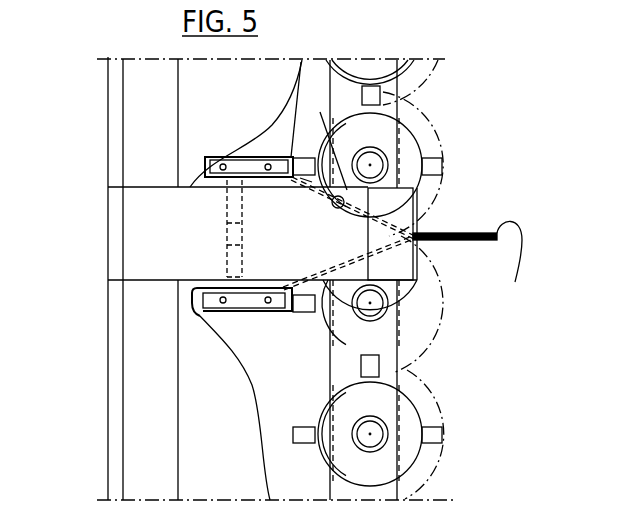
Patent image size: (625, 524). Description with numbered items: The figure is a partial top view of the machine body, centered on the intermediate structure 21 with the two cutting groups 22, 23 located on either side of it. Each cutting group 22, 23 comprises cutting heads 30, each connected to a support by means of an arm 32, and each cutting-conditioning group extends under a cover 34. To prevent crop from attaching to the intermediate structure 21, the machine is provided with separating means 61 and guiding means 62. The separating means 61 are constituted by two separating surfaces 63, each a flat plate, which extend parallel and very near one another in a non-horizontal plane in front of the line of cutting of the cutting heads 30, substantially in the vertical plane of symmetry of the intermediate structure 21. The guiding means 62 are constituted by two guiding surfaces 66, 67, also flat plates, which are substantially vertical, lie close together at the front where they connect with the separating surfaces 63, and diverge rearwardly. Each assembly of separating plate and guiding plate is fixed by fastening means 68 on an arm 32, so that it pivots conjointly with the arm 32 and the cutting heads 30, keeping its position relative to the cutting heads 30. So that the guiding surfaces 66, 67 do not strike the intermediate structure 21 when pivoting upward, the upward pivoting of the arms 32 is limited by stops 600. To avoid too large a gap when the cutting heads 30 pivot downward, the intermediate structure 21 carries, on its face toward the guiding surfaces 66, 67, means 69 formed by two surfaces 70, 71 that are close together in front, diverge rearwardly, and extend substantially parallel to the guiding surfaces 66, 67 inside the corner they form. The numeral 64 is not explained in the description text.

The intermediate structure 21 is at (140, 222).
The cutting group 22 is at (476, 357).
The cutting group 23 is at (478, 116).
The cutting heads 30 is at (387, 137).
The arm 32 is at (292, 157).
The cover 34 is at (215, 122).
The separating means 61 is at (486, 224).
The guiding means 62 is at (404, 216).
The separating surfaces 63 is at (460, 240).
The pitch circle 64 is at (438, 463).
The guiding surface 66 is at (330, 335).
The guiding surface 67 is at (320, 142).
The fastening means 68 is at (221, 165).
The means on intermediate structure 69 is at (346, 216).
The surface 70 is at (352, 248).
The surface 71 is at (308, 180).
The stops 600 is at (237, 251).